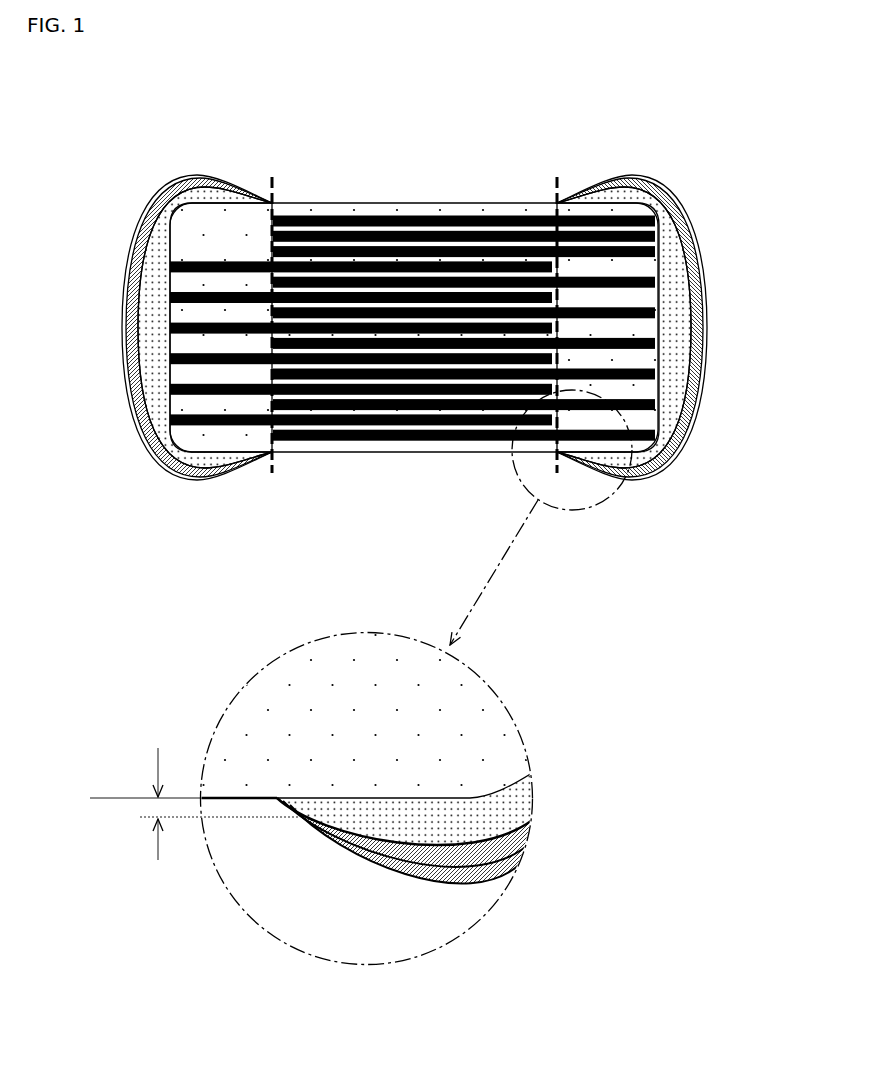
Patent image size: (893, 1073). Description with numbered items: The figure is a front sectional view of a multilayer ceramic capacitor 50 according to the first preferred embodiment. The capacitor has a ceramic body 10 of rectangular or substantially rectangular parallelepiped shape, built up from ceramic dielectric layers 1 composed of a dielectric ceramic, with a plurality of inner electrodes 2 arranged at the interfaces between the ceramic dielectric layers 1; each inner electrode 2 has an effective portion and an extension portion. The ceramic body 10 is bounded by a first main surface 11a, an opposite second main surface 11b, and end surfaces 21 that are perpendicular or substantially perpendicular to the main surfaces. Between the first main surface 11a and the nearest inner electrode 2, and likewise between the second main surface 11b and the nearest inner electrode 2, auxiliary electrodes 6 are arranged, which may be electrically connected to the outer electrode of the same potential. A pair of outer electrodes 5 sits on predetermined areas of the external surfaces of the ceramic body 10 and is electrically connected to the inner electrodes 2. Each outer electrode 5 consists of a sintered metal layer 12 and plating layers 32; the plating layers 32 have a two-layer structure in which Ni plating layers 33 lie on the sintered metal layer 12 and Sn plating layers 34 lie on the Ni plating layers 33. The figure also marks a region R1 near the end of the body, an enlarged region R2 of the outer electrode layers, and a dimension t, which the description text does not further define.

The ceramic dielectric layer 1 is at (295, 355).
The inner electrode 2 is at (680, 63).
The outer electrode 5 is at (423, 506).
The auxiliary electrode 6 is at (630, 230).
The ceramic body 10 is at (380, 188).
The first main surface 11a is at (470, 203).
The second main surface 11b is at (362, 452).
The sintered metal layer 12 is at (146, 312).
The end surface 21 is at (168, 280).
The plating layer 32 is at (422, 551).
The Ni plating layer 33 is at (130, 425).
The Sn plating layer 34 is at (178, 465).
The multilayer ceramic capacitor 50 is at (529, 155).
The corner region R1 is at (262, 462).
The enlarged region R2 is at (560, 512).
The thickness of base electrode layer t is at (187, 804).